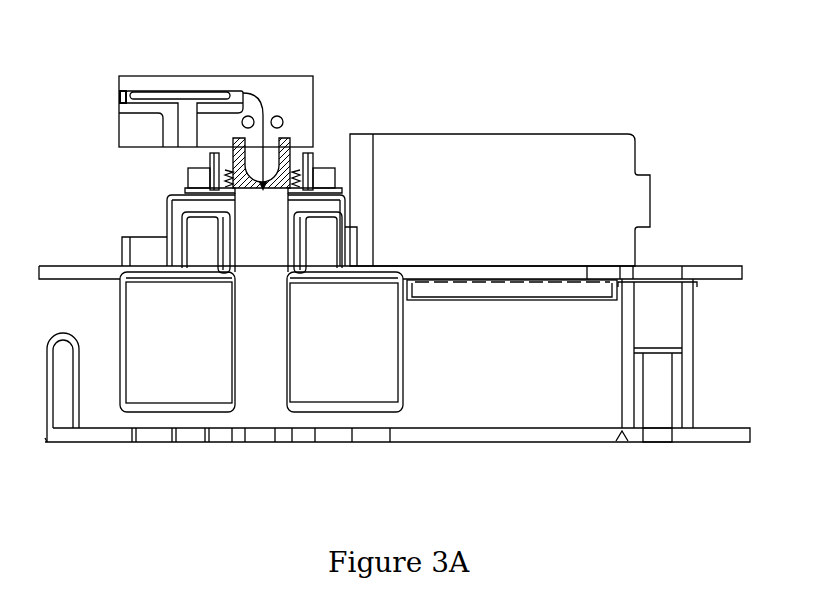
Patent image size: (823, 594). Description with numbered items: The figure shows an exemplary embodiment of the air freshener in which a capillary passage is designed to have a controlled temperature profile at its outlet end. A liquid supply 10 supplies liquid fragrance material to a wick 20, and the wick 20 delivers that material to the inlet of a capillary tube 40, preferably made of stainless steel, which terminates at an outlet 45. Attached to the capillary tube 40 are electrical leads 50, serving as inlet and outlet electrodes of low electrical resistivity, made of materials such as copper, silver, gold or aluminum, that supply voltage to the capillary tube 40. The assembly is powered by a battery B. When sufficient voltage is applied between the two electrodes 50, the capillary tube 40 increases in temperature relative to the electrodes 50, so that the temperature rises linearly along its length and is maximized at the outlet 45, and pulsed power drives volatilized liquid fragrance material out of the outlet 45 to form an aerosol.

The liquid supply 10 is at (347, 372).
The wick 20 is at (262, 260).
The capillary tube 40 is at (162, 92).
The outlet 45 is at (115, 93).
The electrical leads 50 is at (217, 107).
The battery B is at (497, 158).